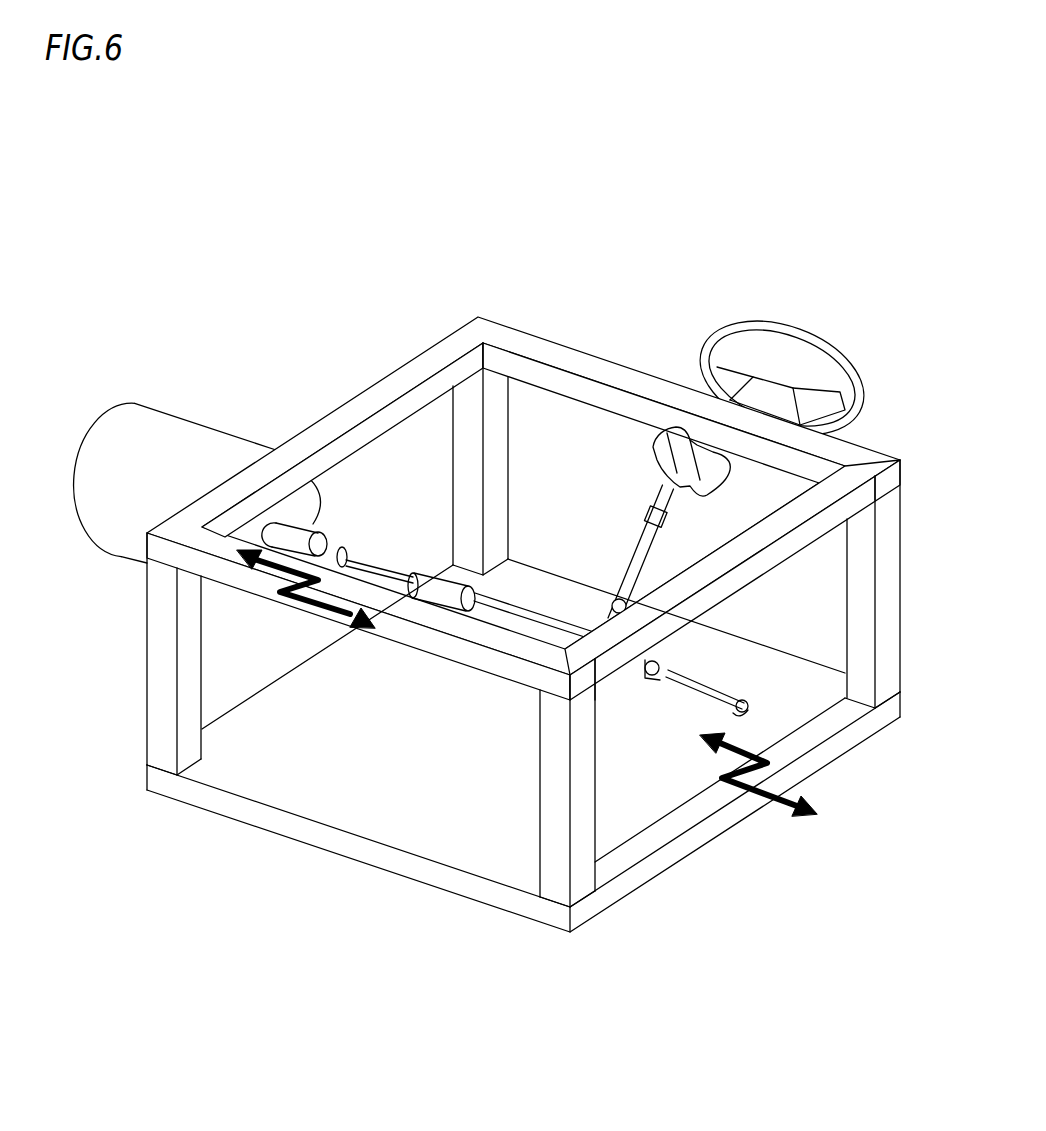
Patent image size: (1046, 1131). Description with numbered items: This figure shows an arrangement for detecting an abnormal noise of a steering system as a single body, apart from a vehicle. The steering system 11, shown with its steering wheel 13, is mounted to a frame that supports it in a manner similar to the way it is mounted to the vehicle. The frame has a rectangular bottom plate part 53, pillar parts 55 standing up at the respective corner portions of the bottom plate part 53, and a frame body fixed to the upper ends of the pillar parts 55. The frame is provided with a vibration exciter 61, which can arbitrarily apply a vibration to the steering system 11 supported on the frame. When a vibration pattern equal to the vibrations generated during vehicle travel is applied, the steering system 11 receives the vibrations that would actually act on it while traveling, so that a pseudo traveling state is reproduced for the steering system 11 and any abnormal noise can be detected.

The steering system 11 is at (640, 500).
The steering wheel 13 is at (752, 322).
The bottom plate part 53 is at (425, 838).
The pillar parts 55 is at (507, 445).
The vibration exciter 61 is at (170, 425).